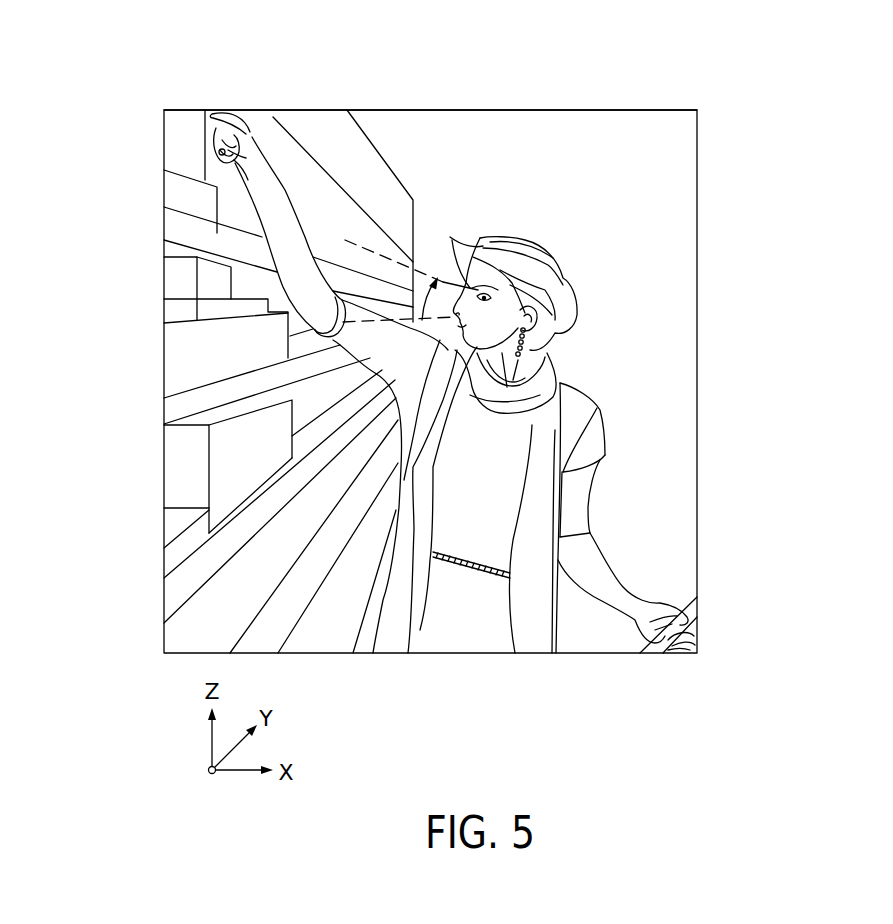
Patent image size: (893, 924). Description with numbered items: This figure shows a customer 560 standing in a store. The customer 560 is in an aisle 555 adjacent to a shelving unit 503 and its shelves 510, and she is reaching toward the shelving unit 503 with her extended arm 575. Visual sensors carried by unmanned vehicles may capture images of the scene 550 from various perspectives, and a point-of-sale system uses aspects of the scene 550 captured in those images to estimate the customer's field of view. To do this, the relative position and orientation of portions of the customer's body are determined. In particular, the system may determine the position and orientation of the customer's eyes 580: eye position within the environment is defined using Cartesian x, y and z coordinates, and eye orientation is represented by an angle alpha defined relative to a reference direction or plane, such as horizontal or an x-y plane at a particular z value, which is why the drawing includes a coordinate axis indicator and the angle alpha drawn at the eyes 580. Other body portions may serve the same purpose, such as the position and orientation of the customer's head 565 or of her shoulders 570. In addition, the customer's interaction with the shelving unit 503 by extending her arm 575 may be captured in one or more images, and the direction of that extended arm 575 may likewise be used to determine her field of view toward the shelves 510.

The shelving unit 503 is at (312, 132).
The shelves 510 is at (171, 228).
The scene 550 is at (627, 78).
The aisle 555 is at (500, 98).
The customer 560 is at (453, 353).
The head 565 is at (504, 259).
The shoulders 570 is at (605, 457).
The arm 575 is at (250, 109).
The eyes 580 is at (480, 290).